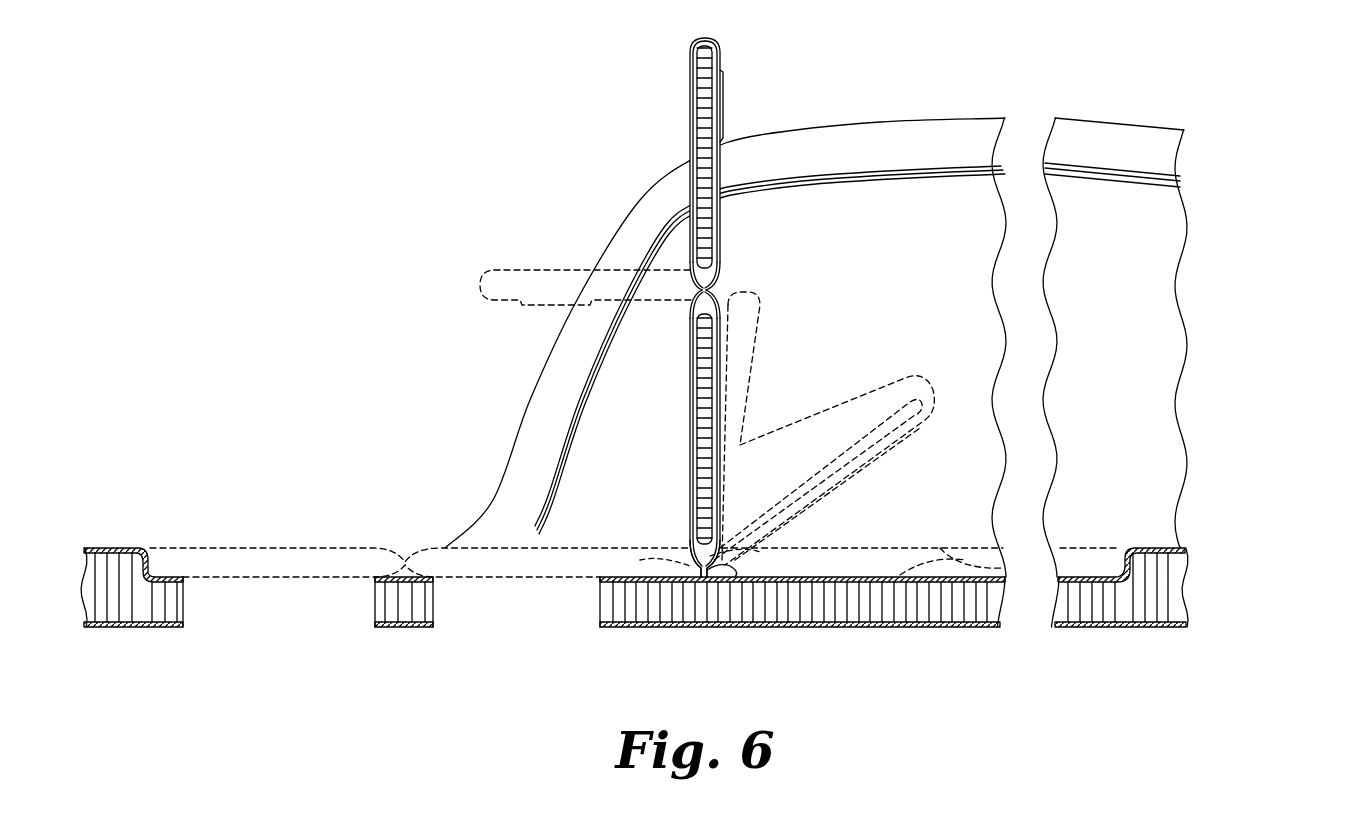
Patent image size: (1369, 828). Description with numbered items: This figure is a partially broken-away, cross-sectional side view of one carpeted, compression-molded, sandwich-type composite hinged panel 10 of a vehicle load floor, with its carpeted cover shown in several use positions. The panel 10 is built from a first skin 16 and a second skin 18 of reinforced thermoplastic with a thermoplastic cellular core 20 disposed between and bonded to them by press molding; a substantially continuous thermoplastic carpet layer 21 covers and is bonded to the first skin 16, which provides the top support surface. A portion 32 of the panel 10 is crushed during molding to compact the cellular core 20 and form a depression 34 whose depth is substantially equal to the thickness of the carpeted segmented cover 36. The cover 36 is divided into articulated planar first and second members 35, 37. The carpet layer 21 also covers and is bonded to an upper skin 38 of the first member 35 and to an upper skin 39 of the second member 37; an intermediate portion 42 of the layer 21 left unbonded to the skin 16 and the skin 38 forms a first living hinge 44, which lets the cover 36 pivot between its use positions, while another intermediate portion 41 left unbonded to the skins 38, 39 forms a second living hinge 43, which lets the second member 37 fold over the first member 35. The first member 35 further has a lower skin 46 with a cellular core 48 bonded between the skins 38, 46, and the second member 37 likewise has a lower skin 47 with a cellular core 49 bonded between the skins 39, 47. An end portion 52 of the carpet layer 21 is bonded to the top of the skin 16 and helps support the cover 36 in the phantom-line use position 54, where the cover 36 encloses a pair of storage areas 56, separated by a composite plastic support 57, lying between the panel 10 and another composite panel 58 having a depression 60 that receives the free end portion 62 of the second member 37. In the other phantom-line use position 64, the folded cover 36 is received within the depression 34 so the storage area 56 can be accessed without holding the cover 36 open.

The hinged panel 10 is at (1268, 573).
The first skin 16 is at (1188, 553).
The second skin 18 is at (1186, 628).
The cellular core 20 is at (1186, 592).
The carpet layer 21 is at (1190, 549).
The crushed portion 32 is at (940, 578).
The depression 34 is at (858, 577).
The first member 35 is at (732, 410).
The carpeted segmented cover 36 is at (732, 56).
The second member 37 is at (732, 178).
The upper skin of first member 38 is at (718, 470).
The upper skin of second member 39 is at (716, 212).
The intermediate portion 41 is at (708, 291).
The intermediate portion 42 is at (733, 580).
The second living hinge 43 is at (686, 288).
The first living hinge 44 is at (682, 568).
The lower skin of first member 46 is at (695, 408).
The lower skin of second member 47 is at (700, 75).
The cellular core of first member 48 is at (705, 422).
The cellular core of second member 49 is at (705, 130).
The end portion 52 is at (630, 578).
The use position 54 is at (478, 577).
The storage area 56 is at (635, 582).
The composite plastic support 57 is at (376, 605).
The composite panel 58 is at (160, 628).
The depression 60 is at (182, 576).
The free end portion 62 is at (180, 548).
The use position 64 is at (878, 548).